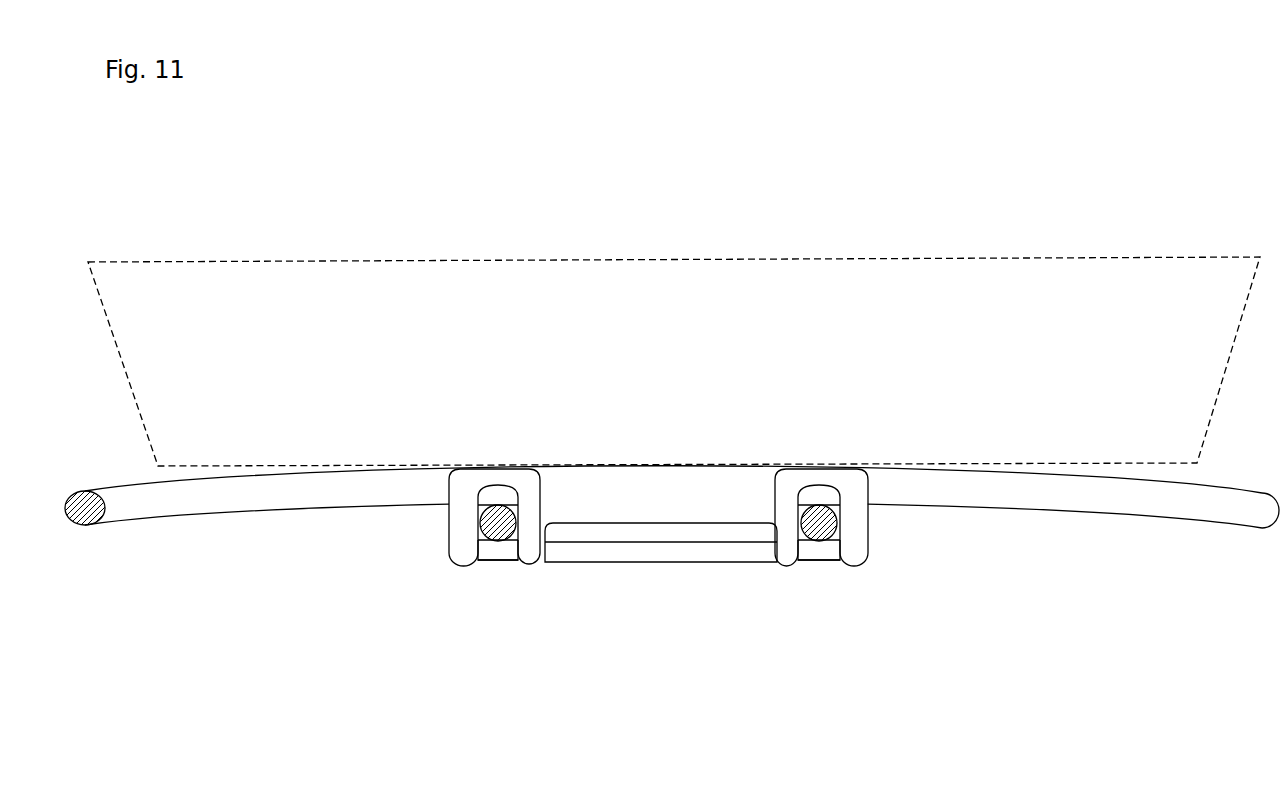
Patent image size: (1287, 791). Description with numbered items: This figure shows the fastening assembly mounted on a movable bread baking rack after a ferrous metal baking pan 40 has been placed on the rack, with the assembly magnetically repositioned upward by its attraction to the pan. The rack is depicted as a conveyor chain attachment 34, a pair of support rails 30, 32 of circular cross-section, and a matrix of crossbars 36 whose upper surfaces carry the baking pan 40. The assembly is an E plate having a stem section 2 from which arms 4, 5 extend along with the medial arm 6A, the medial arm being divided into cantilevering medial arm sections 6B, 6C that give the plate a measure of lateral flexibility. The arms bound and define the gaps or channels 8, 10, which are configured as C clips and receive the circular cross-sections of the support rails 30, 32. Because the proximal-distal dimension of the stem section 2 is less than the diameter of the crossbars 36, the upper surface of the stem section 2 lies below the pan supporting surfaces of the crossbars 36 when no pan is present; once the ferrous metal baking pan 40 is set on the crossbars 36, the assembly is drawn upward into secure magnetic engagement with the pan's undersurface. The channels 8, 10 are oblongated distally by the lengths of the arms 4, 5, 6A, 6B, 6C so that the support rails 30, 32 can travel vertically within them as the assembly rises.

The ferrous metal baking pan 40 is at (700, 318).
The crossbars 36 is at (85, 510).
The arm 5 is at (460, 537).
The arm 4 is at (855, 537).
The stem section 2 is at (491, 483).
The channel 10 is at (498, 497).
The channel 8 is at (821, 497).
The support rail 32 is at (496, 527).
The support rail 30 is at (818, 525).
The conveyor chain attachment 34 is at (693, 552).
The medial arm 6A is at (632, 505).
The cantilevering medial arm section 6B is at (783, 543).
The cantilevering medial arm section 6C is at (540, 552).